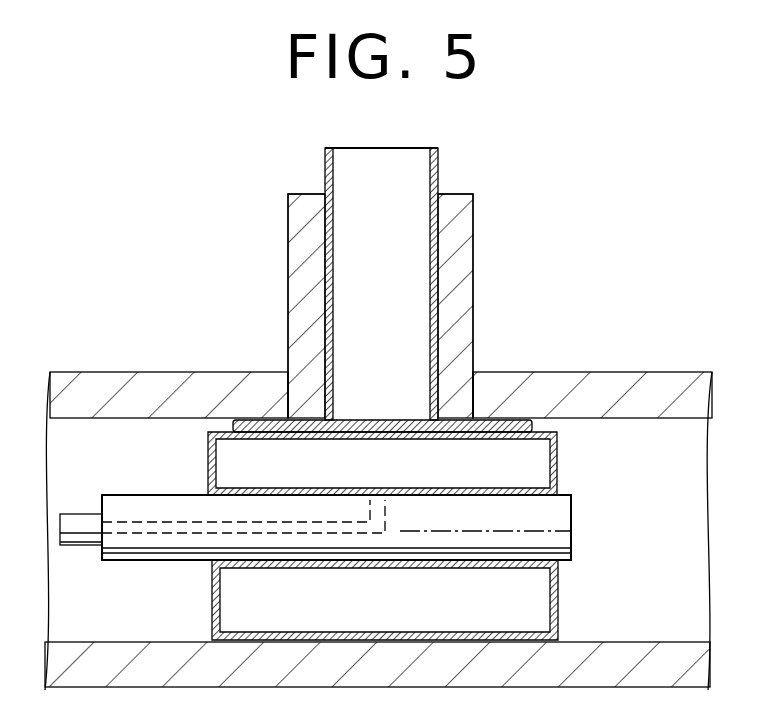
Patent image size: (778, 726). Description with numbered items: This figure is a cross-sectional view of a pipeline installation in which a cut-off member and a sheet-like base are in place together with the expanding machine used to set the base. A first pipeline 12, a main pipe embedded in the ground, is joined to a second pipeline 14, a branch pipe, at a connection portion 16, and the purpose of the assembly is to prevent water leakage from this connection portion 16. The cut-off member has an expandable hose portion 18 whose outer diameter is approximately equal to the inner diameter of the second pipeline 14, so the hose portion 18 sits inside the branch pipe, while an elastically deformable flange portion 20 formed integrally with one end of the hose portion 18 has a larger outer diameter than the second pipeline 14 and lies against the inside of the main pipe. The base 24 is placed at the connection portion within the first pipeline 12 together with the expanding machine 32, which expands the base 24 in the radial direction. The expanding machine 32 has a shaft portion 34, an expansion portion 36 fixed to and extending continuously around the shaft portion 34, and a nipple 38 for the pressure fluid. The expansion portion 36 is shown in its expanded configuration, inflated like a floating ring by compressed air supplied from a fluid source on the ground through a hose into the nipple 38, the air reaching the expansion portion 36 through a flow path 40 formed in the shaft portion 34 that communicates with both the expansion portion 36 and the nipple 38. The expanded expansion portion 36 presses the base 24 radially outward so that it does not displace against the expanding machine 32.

The first pipeline 12 is at (652, 390).
The second pipeline 14 is at (473, 230).
The connection portion 16 is at (474, 416).
The hose portion 18 is at (439, 173).
The flange portion 20 is at (510, 422).
The base 24 is at (237, 428).
The expanding machine 32 is at (577, 498).
The shaft portion 34 is at (557, 531).
The expansion portion 36 is at (560, 605).
The nipple 38 is at (82, 547).
The flow path 40 is at (177, 537).